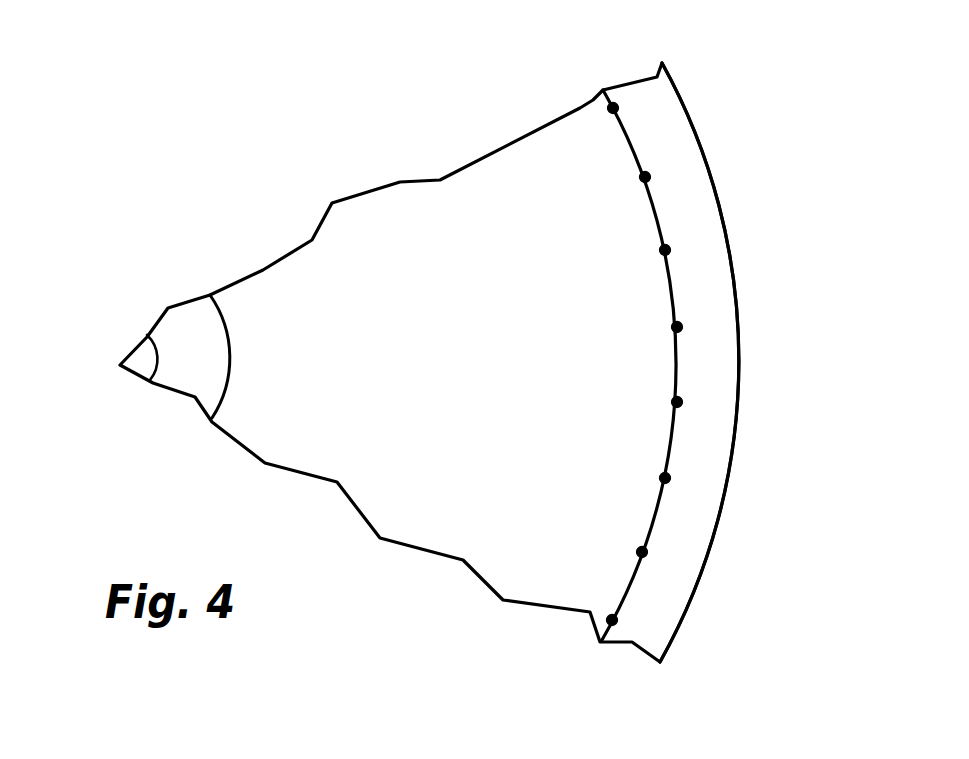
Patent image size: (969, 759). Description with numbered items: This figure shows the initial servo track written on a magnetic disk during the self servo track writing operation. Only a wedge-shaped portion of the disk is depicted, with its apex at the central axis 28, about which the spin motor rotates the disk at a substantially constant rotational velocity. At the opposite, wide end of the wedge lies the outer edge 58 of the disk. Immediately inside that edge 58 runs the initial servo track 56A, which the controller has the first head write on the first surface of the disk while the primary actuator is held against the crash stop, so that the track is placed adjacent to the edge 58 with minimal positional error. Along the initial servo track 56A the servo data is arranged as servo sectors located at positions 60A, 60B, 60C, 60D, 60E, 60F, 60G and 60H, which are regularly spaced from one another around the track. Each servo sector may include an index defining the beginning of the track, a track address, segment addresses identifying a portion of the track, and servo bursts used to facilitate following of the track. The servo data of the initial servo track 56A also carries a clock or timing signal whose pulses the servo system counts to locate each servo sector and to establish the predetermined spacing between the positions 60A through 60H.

The central axis 28 is at (132, 358).
The initial servo track 56A is at (627, 130).
The edge 58 is at (713, 183).
The servo sector position 60A is at (612, 620).
The servo sector position 60B is at (642, 552).
The servo sector position 60C is at (665, 478).
The servo sector position 60D is at (677, 402).
The servo sector position 60E is at (677, 327).
The servo sector position 60F is at (665, 250).
The servo sector position 60G is at (645, 177).
The servo sector position 60H is at (613, 108).